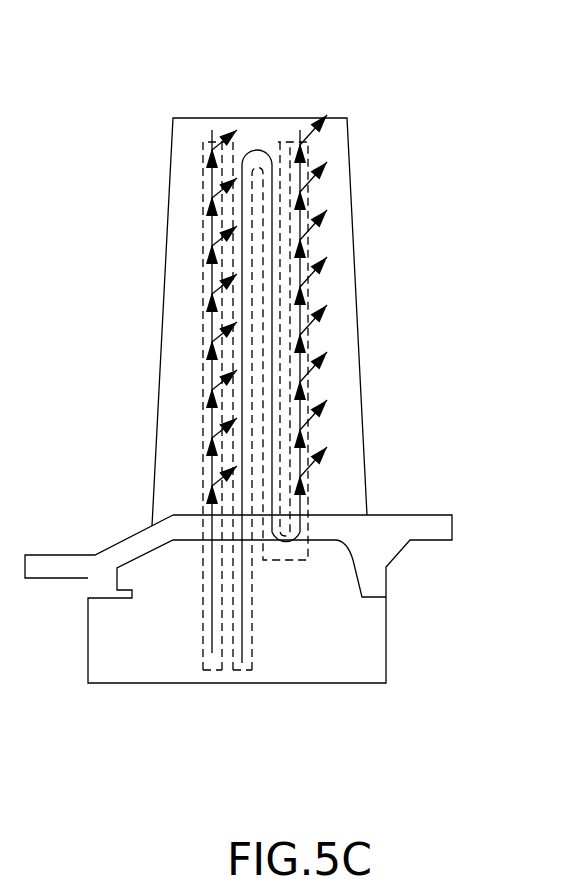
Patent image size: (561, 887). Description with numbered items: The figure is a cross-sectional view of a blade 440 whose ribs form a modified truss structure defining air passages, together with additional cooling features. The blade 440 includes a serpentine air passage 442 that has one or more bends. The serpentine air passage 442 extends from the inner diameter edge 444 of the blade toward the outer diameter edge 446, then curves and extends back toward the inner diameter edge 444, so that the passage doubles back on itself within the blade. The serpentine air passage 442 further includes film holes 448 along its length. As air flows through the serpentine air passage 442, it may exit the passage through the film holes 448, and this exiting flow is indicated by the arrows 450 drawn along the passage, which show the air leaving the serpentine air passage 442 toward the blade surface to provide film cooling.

The blade 440 is at (271, 391).
The serpentine air passage 442 is at (310, 380).
The inner diameter edge 444 is at (315, 683).
The outer diameter edge 446 is at (218, 118).
The film holes 448 is at (310, 289).
The arrows 450 is at (318, 228).